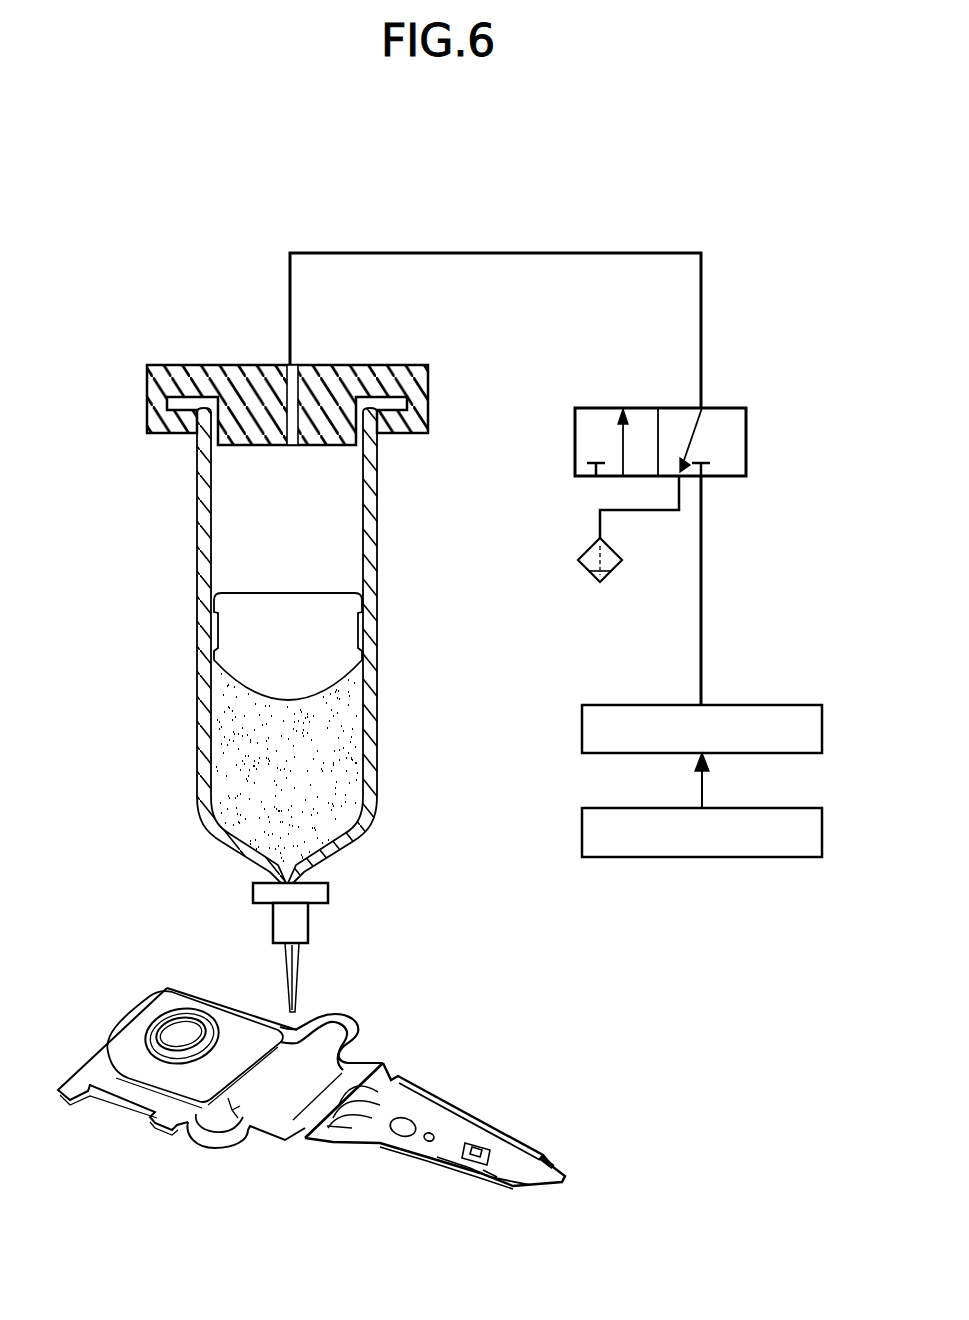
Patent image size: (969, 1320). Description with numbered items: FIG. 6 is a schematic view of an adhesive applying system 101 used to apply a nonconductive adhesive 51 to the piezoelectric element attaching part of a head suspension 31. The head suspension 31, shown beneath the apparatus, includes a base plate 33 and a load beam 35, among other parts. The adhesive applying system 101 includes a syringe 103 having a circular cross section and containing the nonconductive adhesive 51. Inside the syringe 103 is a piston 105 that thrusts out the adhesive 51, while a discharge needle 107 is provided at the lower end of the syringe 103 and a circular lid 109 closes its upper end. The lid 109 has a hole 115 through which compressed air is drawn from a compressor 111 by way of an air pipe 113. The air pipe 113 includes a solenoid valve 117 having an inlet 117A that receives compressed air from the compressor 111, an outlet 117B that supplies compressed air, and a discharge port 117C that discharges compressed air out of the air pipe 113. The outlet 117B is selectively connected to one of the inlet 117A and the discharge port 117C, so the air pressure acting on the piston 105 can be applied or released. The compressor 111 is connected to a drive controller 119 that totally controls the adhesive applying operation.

The adhesive applying system 101 is at (543, 213).
The syringe 103 is at (372, 509).
The piston 105 is at (313, 653).
The nonconductive adhesive 51 is at (310, 773).
The discharge needle 107 is at (290, 988).
The circular lid 109 is at (358, 365).
The air pipe 113 is at (605, 252).
The hole 115 is at (298, 364).
The solenoid valve 117 is at (753, 391).
The inlet 117A is at (703, 478).
The outlet 117B is at (700, 408).
The discharge port 117C is at (679, 478).
The compressor 111 is at (752, 706).
The drive controller 119 is at (752, 808).
The base plate 33 is at (227, 1020).
The head suspension 31 is at (465, 1055).
The load beam 35 is at (413, 1144).